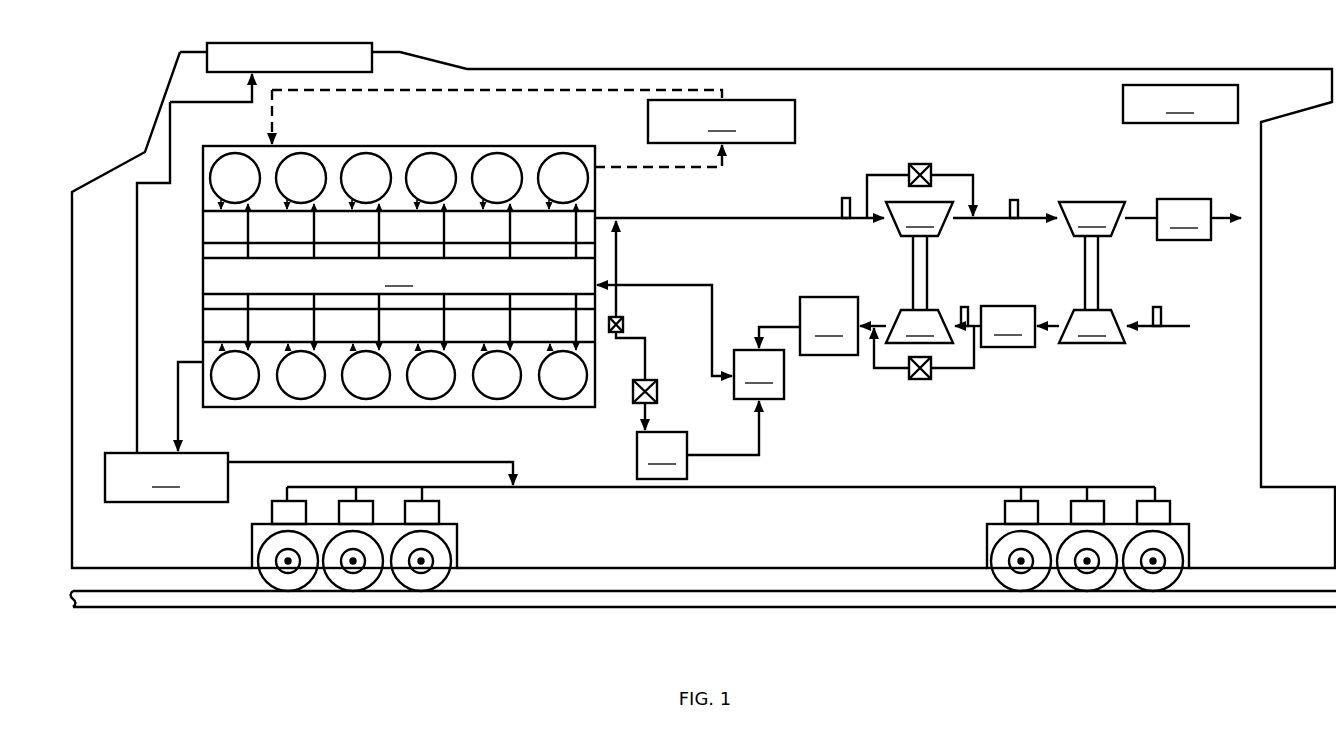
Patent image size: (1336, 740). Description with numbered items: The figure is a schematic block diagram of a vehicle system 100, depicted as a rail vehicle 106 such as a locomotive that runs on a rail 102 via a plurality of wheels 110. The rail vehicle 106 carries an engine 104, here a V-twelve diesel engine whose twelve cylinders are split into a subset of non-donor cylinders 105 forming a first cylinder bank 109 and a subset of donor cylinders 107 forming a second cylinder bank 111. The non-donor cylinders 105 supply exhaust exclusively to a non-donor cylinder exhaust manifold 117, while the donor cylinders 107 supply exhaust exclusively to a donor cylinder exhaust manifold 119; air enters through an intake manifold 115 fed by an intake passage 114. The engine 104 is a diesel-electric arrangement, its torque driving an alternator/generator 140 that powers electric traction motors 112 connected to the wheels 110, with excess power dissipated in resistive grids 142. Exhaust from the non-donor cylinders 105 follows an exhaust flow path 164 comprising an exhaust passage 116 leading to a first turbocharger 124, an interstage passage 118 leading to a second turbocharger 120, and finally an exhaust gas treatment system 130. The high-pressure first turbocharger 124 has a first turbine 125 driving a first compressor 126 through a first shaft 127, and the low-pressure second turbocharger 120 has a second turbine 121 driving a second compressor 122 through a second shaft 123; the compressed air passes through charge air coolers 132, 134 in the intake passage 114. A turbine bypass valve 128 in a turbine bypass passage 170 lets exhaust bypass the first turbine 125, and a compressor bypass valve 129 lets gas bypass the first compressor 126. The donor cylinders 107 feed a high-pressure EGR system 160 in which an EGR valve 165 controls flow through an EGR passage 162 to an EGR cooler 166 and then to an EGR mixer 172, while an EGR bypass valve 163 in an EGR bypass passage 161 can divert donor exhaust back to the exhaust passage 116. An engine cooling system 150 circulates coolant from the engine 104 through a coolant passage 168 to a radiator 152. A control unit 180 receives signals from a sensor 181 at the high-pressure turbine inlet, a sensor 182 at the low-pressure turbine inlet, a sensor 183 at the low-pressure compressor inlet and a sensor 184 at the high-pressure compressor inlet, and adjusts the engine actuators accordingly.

The vehicle system 100 is at (703, 285).
The rail 102 is at (1258, 607).
The engine 104 is at (375, 273).
The non-donor cylinders 105 is at (366, 151).
The rail vehicle 106 is at (1018, 68).
The donor cylinders 107 is at (399, 394).
The first cylinder bank 109 is at (337, 155).
The wheels 110 is at (442, 553).
The second cylinder bank 111 is at (523, 400).
The traction motors 112 is at (441, 521).
The intake passage 114 is at (1140, 328).
The intake manifold 115 is at (399, 276).
The exhaust passage 116 is at (750, 218).
The non-donor cylinder exhaust manifold 117 is at (203, 231).
The interstage passage 118 is at (993, 220).
The donor cylinder exhaust manifold 119 is at (203, 331).
The second turbocharger 120 is at (1109, 300).
The second turbine 121 is at (1092, 219).
The second compressor 122 is at (1091, 362).
The second shaft 123 is at (1098, 292).
The first turbocharger 124 is at (952, 307).
The first turbine 125 is at (919, 219).
The first compressor 126 is at (919, 326).
The first shaft 127 is at (927, 292).
The turbine bypass valve 128 is at (932, 171).
The compressor bypass valve 129 is at (909, 376).
The exhaust gas treatment system 130 is at (1183, 219).
The charge air cooler 132 is at (1008, 326).
The charge air cooler 134 is at (808, 326).
The alternator/generator 140 is at (309, 432).
The resistive grids 142 is at (366, 43).
The engine cooling system 150 is at (564, 140).
The radiator 152 is at (721, 121).
The EGR system 160 is at (709, 350).
The EGR bypass passage 161 is at (616, 244).
The EGR passage 162 is at (645, 362).
The EGR bypass valve 163 is at (618, 316).
The exhaust flow path 164 is at (928, 265).
The EGR valve 165 is at (651, 403).
The EGR cooler 166 is at (698, 440).
The coolant passage 168 is at (650, 168).
The turbine bypass passage 170 is at (921, 167).
The EGR mixer 172 is at (759, 374).
The control unit 180 is at (1180, 104).
The sensor 181 is at (846, 198).
The sensor 182 is at (1014, 200).
The sensor 183 is at (1157, 307).
The sensor 184 is at (964, 307).